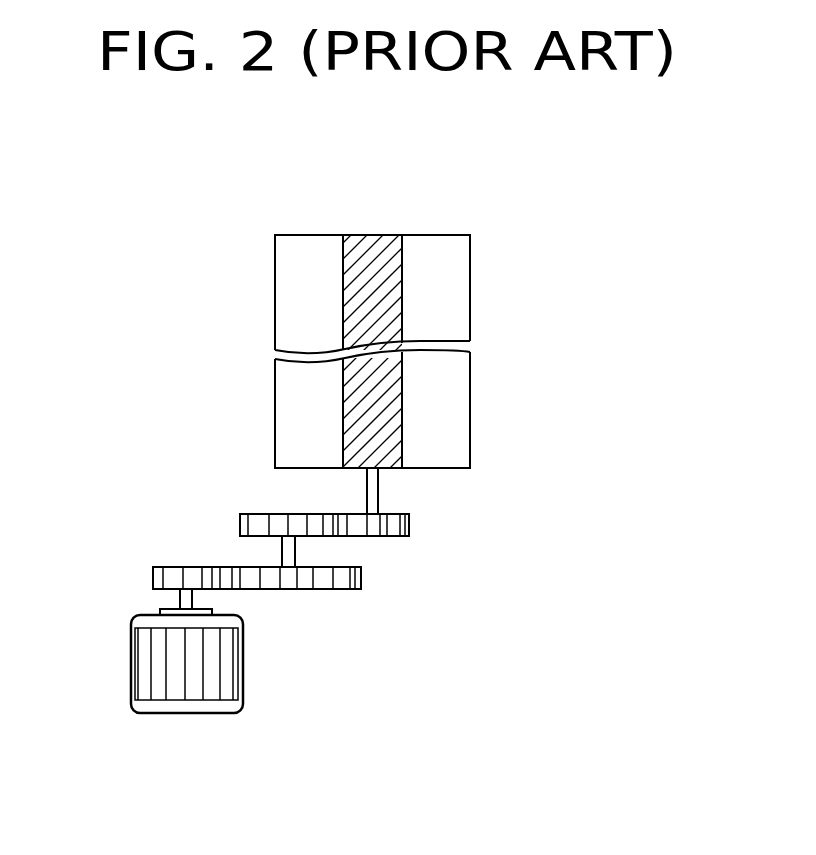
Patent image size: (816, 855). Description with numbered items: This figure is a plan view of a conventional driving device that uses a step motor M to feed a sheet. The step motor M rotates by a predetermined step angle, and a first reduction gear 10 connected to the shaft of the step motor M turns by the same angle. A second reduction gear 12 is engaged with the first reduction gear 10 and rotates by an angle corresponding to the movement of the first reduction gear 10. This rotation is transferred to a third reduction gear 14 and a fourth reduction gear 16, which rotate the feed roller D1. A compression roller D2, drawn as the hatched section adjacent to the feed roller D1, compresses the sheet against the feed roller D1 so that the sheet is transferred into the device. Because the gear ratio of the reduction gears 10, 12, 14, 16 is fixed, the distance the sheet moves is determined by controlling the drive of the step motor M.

The first reduction gear 10 is at (167, 568).
The second reduction gear 12 is at (338, 589).
The third reduction gear 14 is at (258, 514).
The fourth reduction gear 16 is at (409, 530).
The feed roller D1 is at (293, 248).
The compression roller D2 is at (377, 240).
The step motor M is at (183, 713).